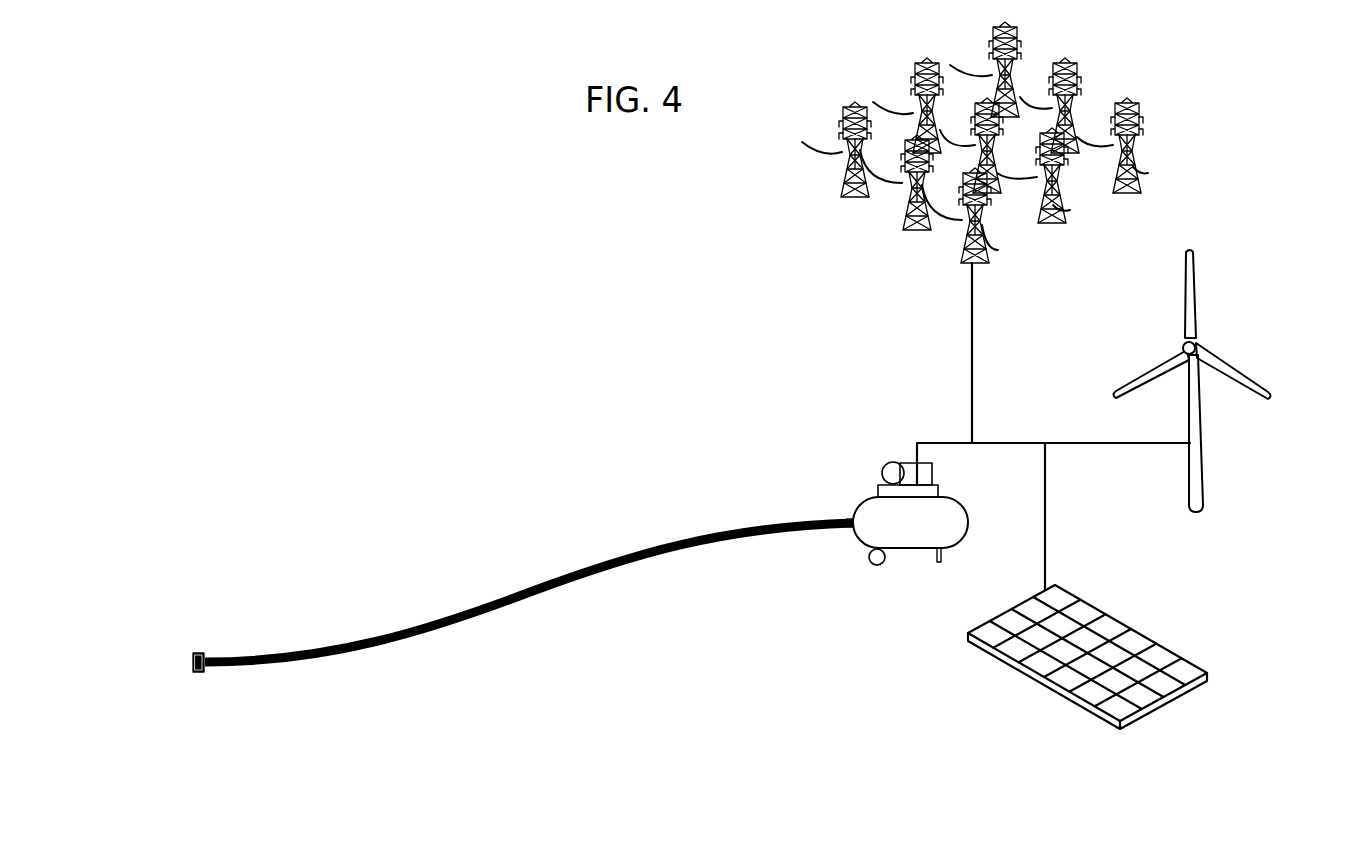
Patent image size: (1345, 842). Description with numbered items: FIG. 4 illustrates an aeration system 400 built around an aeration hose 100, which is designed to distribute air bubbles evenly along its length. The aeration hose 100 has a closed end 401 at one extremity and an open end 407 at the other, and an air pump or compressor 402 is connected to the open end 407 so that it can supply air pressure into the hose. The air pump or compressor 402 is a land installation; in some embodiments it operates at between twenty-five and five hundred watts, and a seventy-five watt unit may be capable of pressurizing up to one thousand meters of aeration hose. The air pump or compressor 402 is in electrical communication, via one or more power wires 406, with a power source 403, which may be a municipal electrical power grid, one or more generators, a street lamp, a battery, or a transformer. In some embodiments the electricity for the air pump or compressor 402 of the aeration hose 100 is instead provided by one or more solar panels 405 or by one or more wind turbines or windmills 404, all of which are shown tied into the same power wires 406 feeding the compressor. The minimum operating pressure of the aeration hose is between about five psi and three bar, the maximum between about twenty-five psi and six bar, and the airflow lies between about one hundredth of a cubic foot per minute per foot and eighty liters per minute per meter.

The aeration hose 100 is at (360, 695).
The system 400 is at (368, 495).
The closed end 401 is at (196, 653).
The air pump or compressor 402 is at (855, 500).
The power source 403 is at (847, 195).
The wind turbines or windmills 404 is at (1197, 293).
The solar panels 405 is at (1147, 638).
The power wires 406 is at (946, 442).
The open end 407 is at (853, 533).